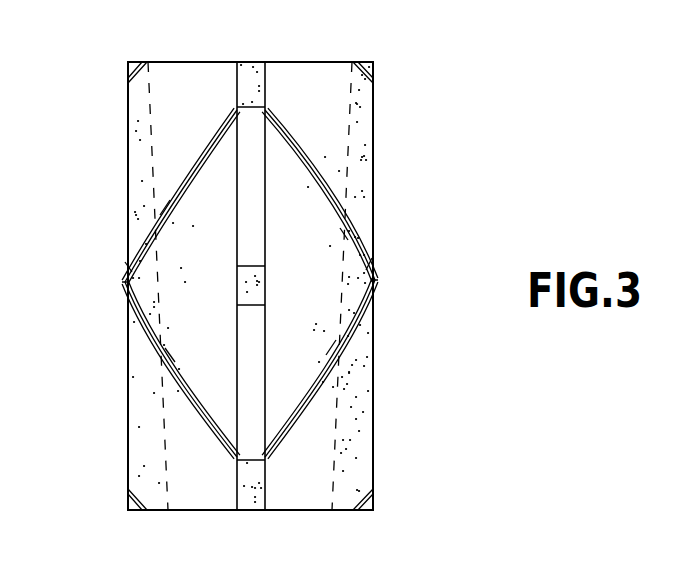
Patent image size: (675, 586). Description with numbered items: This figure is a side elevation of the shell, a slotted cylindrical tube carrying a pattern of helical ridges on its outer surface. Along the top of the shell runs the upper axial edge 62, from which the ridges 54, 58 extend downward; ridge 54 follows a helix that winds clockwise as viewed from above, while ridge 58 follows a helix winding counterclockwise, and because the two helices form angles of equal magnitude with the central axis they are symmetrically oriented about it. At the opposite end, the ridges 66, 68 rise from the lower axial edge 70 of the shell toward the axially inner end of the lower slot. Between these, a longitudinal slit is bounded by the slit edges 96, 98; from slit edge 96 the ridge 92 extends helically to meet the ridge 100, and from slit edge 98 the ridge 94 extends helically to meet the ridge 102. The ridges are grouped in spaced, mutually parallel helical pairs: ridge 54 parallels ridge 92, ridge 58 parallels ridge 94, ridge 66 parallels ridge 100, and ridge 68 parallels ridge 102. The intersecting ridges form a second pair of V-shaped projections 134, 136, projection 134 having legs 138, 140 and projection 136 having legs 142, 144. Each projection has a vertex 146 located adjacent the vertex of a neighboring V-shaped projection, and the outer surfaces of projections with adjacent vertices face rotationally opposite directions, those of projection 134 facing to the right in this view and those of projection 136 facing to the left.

The ridge 54 is at (128, 84).
The ridge 58 is at (373, 82).
The upper axial edge 62 is at (160, 62).
The ridge 66 is at (128, 494).
The ridge 68 is at (375, 490).
The lower axial edge 70 is at (292, 512).
The ridge 92 is at (187, 180).
The ridge 94 is at (310, 188).
The slit edge 96 is at (247, 63).
The slit edge 98 is at (264, 68).
The ridge 100 is at (191, 392).
The ridge 102 is at (300, 405).
The V-shaped projection 134 is at (372, 262).
The V-shaped projection 136 is at (127, 270).
The leg 138 is at (344, 234).
The leg 140 is at (332, 346).
The leg 142 is at (154, 213).
The leg 144 is at (170, 358).
The vertex 146 is at (124, 288).